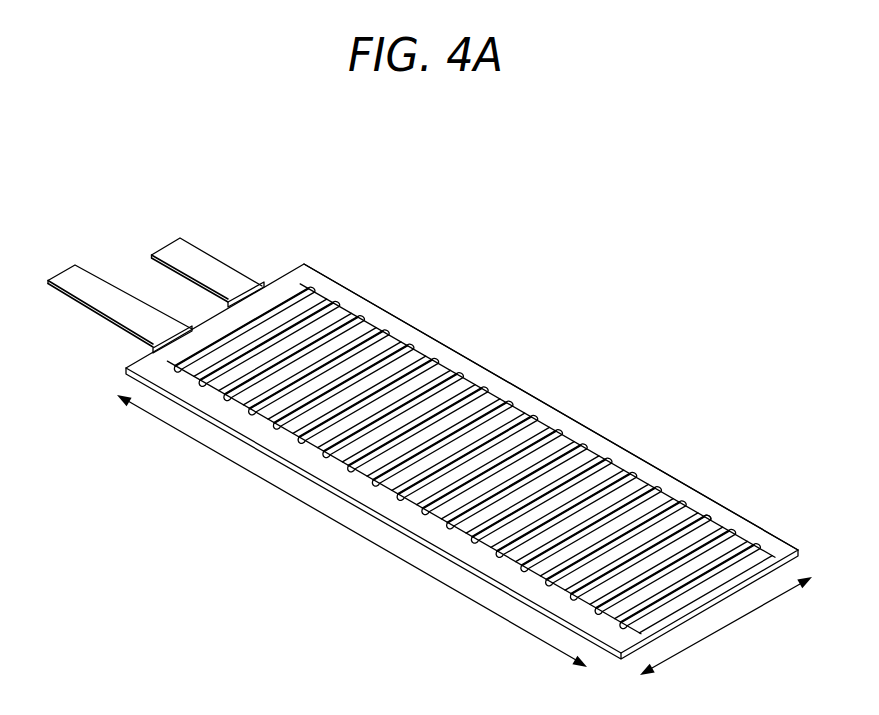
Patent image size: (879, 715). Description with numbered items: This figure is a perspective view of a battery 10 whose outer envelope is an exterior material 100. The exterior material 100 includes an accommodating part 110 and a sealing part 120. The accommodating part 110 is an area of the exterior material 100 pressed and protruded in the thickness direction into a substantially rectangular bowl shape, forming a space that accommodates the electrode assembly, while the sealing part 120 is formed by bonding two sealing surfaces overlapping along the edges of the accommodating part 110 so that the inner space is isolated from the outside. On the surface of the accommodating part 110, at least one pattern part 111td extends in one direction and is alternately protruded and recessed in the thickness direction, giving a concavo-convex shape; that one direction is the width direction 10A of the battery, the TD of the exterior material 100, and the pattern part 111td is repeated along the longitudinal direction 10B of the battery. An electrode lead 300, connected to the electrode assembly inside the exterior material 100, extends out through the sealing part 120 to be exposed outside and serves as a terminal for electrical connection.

The battery 10 is at (148, 154).
The width direction 10A is at (726, 626).
The longitudinal direction 10B is at (352, 531).
The exterior material 100 is at (495, 334).
The accommodating part 110 is at (578, 421).
The pattern part 111td is at (708, 516).
The sealing part 120 is at (636, 466).
The electrode lead 300 is at (85, 330).